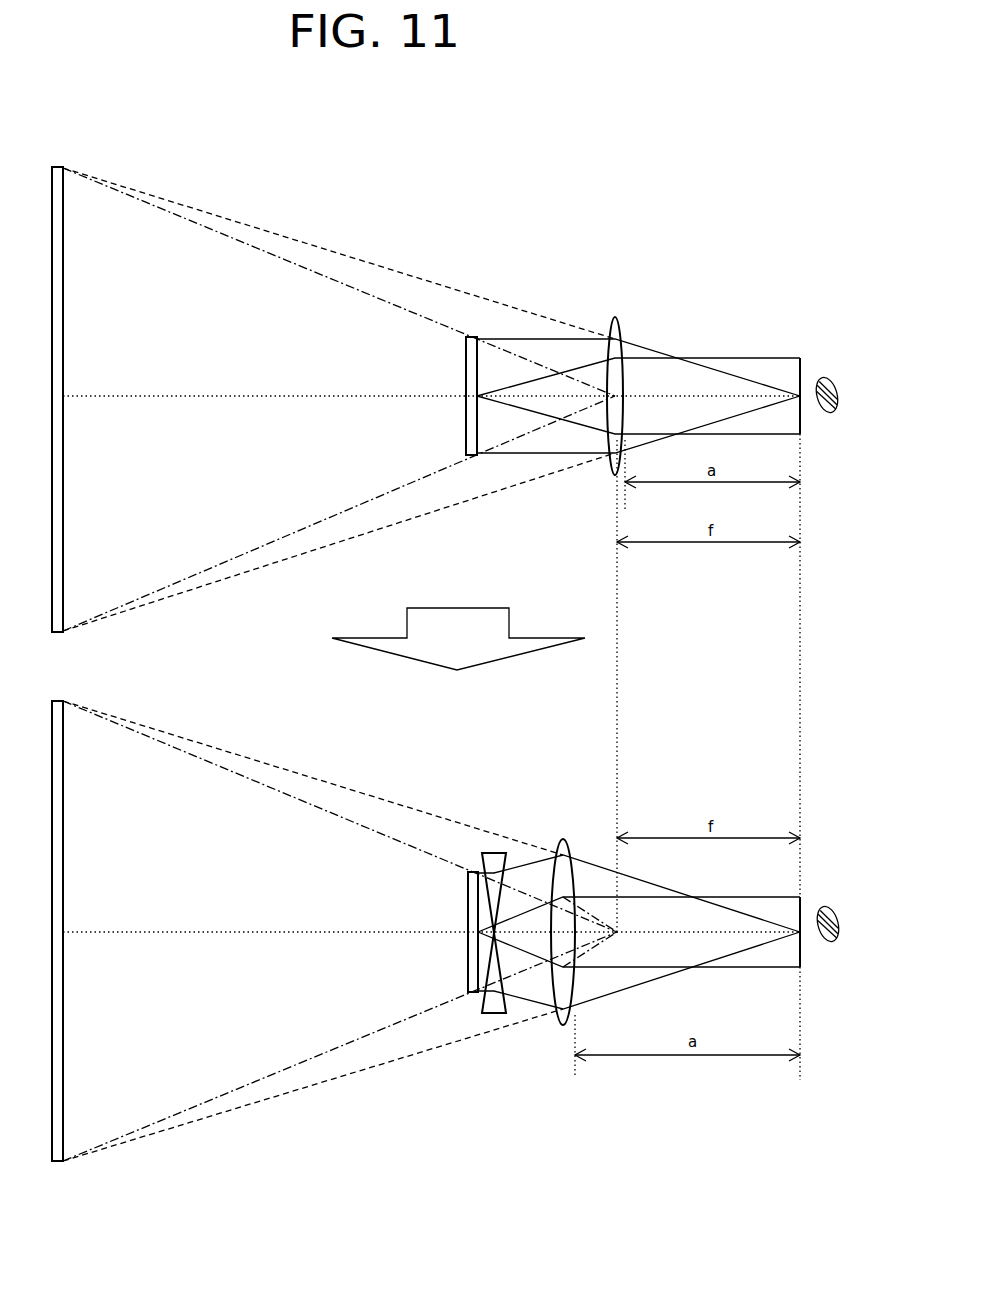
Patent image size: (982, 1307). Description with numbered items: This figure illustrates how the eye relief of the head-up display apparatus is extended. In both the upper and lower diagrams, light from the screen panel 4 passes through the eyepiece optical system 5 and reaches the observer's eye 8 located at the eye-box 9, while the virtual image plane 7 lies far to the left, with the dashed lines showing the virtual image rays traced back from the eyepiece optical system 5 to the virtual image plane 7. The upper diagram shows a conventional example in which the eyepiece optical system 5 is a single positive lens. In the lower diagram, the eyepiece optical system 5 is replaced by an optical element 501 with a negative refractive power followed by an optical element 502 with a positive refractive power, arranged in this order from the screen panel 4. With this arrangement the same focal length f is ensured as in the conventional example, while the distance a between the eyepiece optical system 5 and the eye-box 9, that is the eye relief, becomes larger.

The virtual image plane 7 is at (78, 664).
The screen panel 4 is at (437, 664).
The eyepiece optical system 5 is at (470, 778).
The optical element with negative refractive power 501 is at (507, 890).
The optical element with positive refractive power 502 is at (577, 905).
The eye-box 9 is at (811, 631).
The observer's eye 8 is at (831, 627).